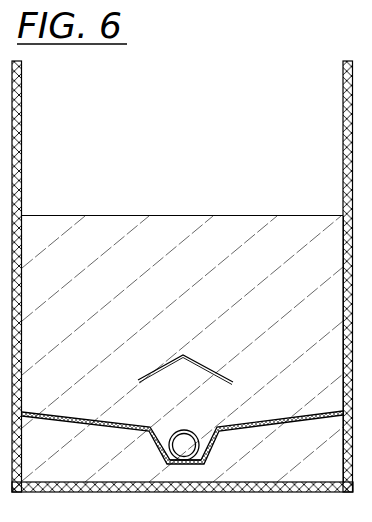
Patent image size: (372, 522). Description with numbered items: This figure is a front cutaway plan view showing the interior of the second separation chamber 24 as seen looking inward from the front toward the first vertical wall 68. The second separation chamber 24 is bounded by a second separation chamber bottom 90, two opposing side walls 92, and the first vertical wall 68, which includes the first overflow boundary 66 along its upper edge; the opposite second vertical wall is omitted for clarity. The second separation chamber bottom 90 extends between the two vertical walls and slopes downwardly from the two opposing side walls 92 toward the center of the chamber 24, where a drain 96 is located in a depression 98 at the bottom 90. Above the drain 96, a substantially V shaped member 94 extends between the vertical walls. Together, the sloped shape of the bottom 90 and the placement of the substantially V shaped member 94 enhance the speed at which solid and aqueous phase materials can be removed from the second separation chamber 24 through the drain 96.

The second separation chamber 24 is at (190, 135).
The first overflow boundary 66 is at (299, 215).
The first vertical wall 68 is at (195, 298).
The second separation chamber bottom 90 is at (86, 420).
The opposing side walls 92 is at (23, 277).
The substantially V shaped member 94 is at (162, 368).
The drain 96 is at (184, 430).
The depression 98 is at (196, 463).